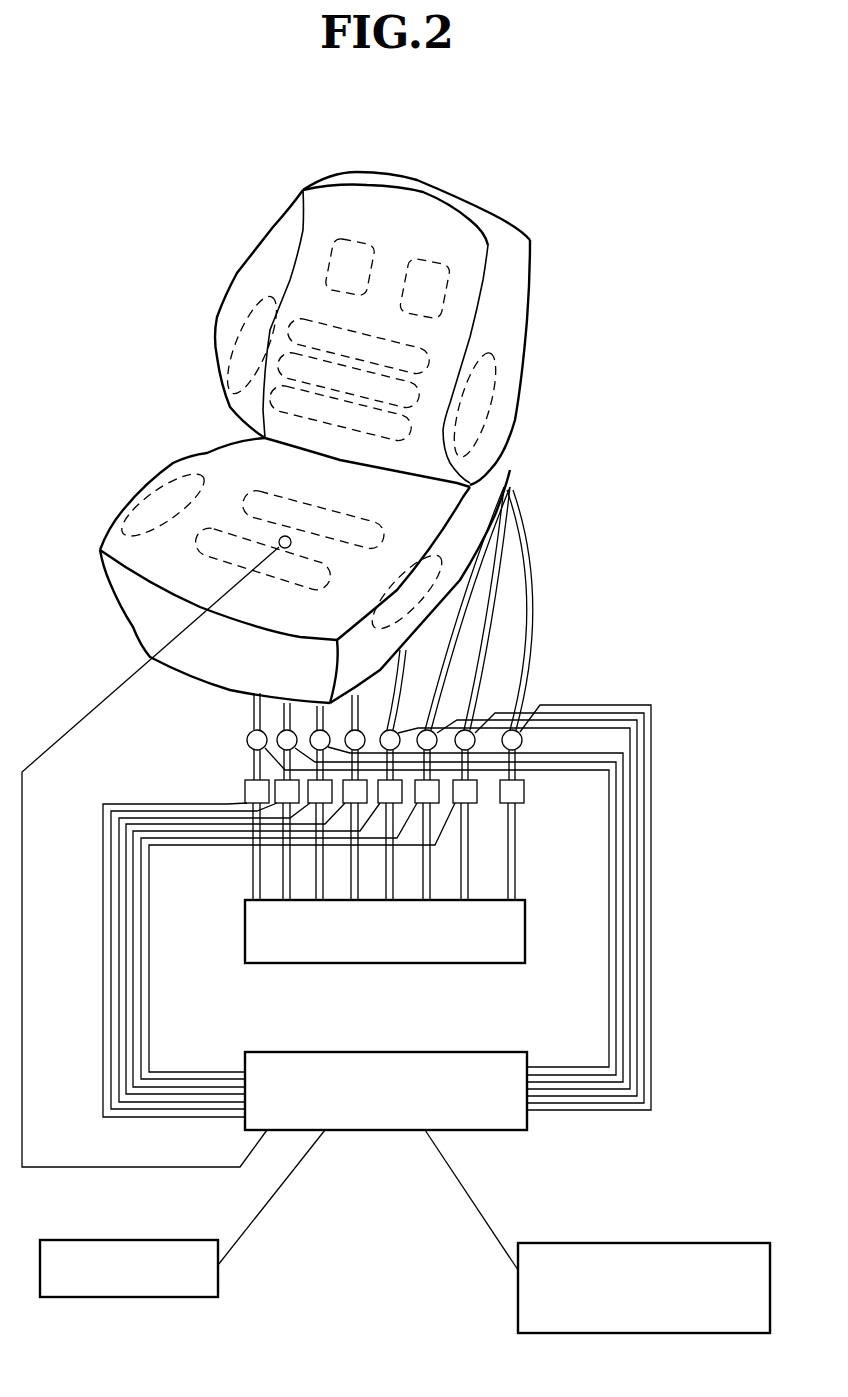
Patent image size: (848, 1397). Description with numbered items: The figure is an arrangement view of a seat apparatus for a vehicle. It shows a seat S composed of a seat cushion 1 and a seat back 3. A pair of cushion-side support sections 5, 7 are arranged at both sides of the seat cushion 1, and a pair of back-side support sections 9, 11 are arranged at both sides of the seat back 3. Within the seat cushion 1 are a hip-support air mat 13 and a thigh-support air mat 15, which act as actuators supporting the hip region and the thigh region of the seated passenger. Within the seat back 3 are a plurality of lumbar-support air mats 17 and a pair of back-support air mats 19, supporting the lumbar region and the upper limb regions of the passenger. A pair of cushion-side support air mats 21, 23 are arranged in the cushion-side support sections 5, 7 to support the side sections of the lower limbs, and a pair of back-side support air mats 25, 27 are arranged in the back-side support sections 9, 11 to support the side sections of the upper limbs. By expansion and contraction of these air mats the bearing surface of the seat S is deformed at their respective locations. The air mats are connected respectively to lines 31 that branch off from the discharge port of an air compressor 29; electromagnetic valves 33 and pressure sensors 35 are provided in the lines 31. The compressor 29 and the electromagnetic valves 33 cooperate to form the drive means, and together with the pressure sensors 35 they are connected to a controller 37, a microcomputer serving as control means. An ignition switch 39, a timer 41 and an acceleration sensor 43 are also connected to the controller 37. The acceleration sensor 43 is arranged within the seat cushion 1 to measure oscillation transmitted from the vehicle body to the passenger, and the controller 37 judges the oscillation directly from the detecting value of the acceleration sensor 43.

The seat cushion 1 is at (145, 628).
The seat back 3 is at (455, 228).
The cushion-side support section 5 is at (180, 456).
The cushion-side support section 7 is at (475, 520).
The back-side support section 9 is at (242, 282).
The back-side support section 11 is at (452, 370).
The hip-support air mat 13 is at (340, 516).
The thigh-support air mat 15 is at (250, 600).
The lumbar-support air mats 17 is at (318, 322).
The back-support air mats 19 is at (375, 244).
The cushion-side support air mat 21 is at (123, 513).
The cushion-side support air mat 23 is at (445, 598).
The back-side support air mat 25 is at (240, 357).
The back-side support air mat 27 is at (483, 412).
The air compressor 29 is at (500, 963).
The lines 31 is at (530, 610).
The electromagnetic valves 33 is at (515, 790).
The pressure sensors 35 is at (525, 745).
The controller 37 is at (292, 1052).
The ignition switch 39 is at (640, 1243).
The timer 41 is at (162, 1240).
The acceleration sensor 43 is at (285, 535).
The seat S is at (549, 366).